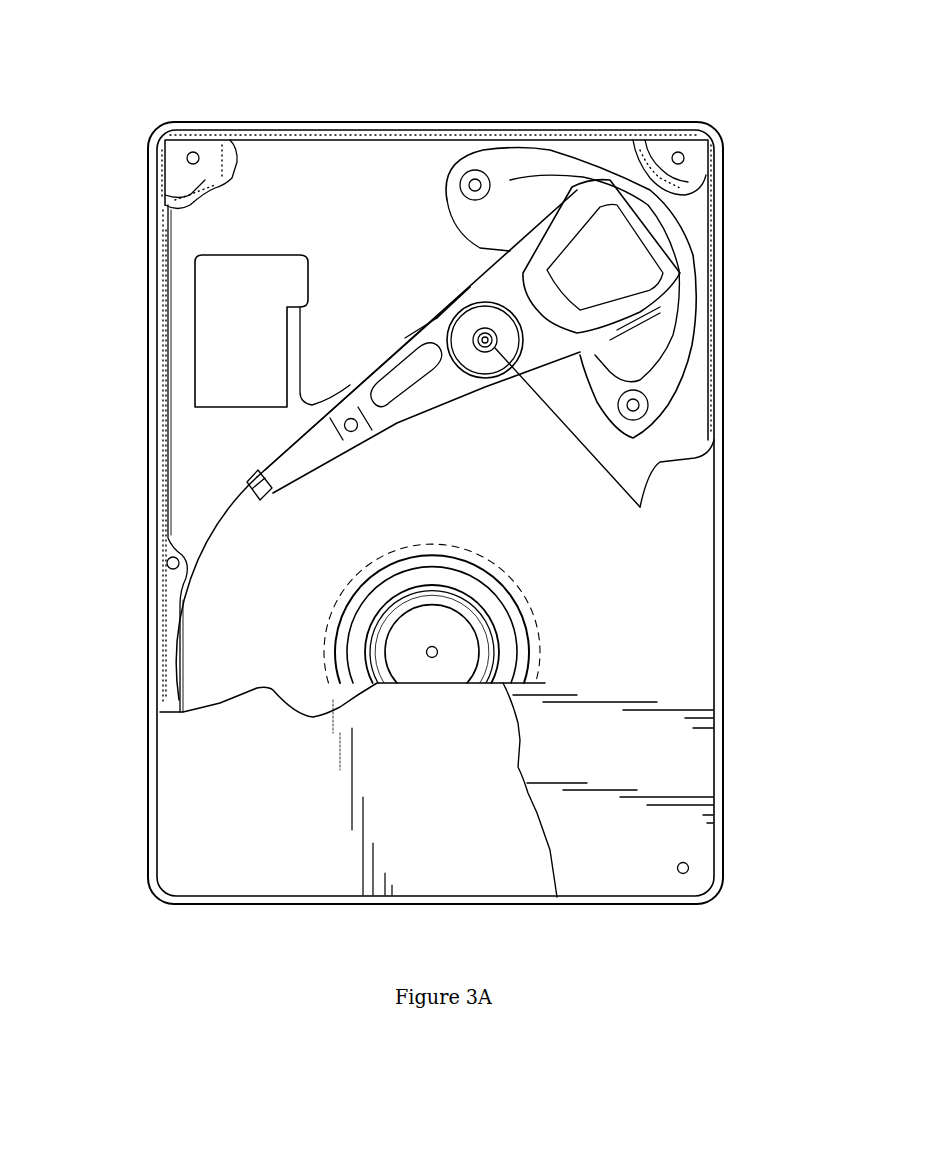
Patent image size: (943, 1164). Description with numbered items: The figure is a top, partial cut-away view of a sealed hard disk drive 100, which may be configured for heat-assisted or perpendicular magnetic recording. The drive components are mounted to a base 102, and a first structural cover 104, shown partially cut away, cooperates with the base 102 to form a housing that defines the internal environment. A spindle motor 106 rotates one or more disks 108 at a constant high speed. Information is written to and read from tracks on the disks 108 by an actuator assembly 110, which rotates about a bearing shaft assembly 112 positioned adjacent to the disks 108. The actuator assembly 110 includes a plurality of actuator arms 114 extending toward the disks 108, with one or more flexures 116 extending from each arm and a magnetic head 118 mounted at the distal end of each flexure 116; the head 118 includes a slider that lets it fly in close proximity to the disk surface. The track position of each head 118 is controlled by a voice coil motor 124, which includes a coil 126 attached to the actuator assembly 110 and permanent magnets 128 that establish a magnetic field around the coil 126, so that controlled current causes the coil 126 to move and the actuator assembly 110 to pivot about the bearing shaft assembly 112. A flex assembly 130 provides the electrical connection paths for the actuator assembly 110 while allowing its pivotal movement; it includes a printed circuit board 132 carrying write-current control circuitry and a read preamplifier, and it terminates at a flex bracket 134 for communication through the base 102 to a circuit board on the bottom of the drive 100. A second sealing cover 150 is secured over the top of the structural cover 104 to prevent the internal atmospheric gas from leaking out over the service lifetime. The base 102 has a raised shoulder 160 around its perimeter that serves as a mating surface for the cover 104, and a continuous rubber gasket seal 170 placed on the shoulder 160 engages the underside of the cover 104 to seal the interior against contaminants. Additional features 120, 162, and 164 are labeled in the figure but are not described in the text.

The hard disk drive 100 is at (198, 88).
The base 102 is at (232, 472).
The first structural cover 104 is at (694, 752).
The spindle motor 106 is at (432, 658).
The disk 108 is at (287, 690).
The actuator assembly 110 is at (477, 388).
The bearing shaft assembly 112 is at (488, 343).
The actuator arm 114 is at (427, 407).
The flexure 116 is at (308, 462).
The magnetic head 118 is at (258, 500).
The spindle hub 120 is at (325, 642).
The voice coil motor 124 is at (532, 134).
The coil 126 is at (662, 250).
The permanent magnet 128 is at (515, 212).
The flex assembly 130 is at (402, 335).
The printed circuit board 132 is at (455, 302).
The flex bracket 134 is at (240, 342).
The second sealing cover 150 is at (207, 748).
The raised contact surface or shoulder 160 is at (690, 140).
The screw hole 162 is at (689, 868).
The corner boss 164 is at (187, 158).
The seal 170 is at (698, 182).